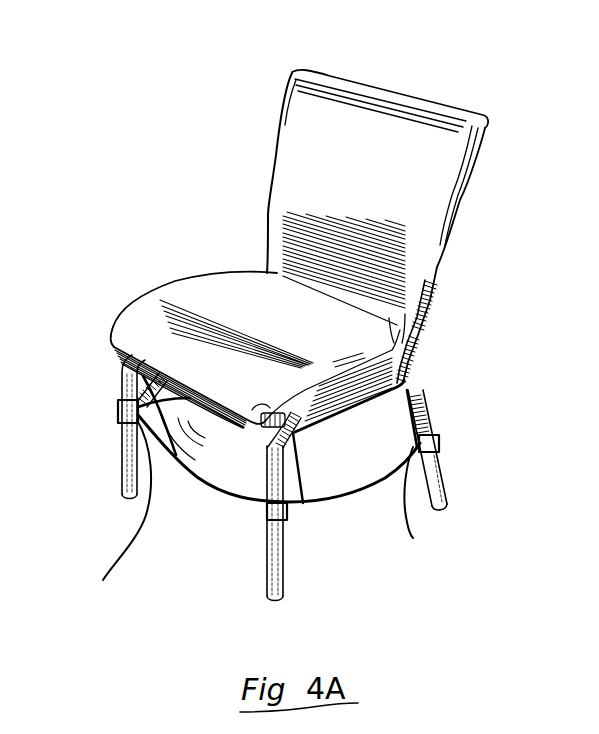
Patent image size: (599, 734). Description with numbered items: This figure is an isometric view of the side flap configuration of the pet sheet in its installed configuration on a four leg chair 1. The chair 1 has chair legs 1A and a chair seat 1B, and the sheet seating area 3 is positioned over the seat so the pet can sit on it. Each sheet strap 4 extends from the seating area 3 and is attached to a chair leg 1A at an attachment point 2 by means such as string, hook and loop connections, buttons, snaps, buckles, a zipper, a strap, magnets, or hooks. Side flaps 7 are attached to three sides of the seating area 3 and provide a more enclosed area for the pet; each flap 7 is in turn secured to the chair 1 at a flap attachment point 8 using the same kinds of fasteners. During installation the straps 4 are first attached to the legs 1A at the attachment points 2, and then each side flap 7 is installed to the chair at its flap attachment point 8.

The chair 1 is at (363, 83).
The chair leg 1A is at (505, 493).
The chair seat 1B is at (232, 308).
The attachment point 2 is at (116, 412).
The sheet seating area 3 is at (228, 496).
The sheet strap 4 is at (259, 516).
The flap 7 is at (420, 407).
The flap attachment point to the chair 8 is at (367, 403).